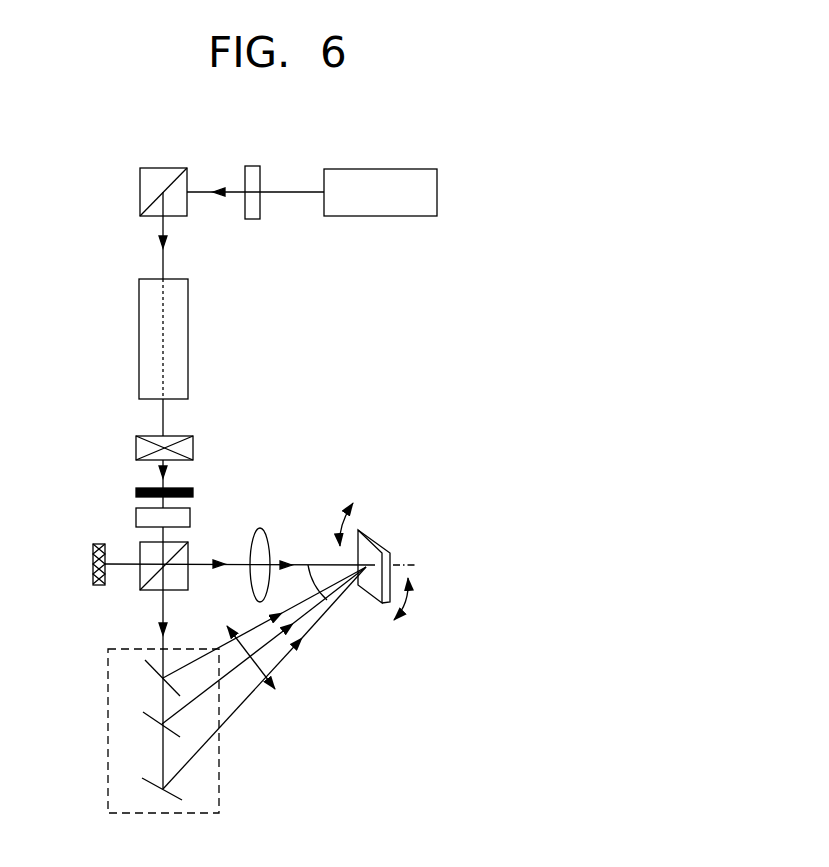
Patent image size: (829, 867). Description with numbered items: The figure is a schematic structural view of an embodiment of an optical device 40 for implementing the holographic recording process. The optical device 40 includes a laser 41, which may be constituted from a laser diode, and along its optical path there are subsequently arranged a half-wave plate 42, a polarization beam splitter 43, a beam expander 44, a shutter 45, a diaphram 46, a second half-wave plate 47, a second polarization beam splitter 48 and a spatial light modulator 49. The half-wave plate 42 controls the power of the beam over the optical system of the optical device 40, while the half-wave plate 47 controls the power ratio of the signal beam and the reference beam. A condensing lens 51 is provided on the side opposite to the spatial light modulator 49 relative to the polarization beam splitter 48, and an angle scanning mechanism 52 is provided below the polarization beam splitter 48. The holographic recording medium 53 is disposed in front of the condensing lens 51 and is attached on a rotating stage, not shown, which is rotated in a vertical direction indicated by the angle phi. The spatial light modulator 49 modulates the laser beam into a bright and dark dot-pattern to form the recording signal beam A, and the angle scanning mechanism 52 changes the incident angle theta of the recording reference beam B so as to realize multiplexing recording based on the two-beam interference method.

The optical device 40 is at (465, 131).
The laser 41 is at (402, 173).
The half-wave plate 42 is at (250, 168).
The polarization beam splitter 43 is at (157, 172).
The beam expander 44 is at (145, 297).
The shutter 45 is at (142, 445).
The diaphram 46 is at (138, 490).
The half-wave plate 47 is at (138, 520).
The polarization beam splitter 48 is at (183, 560).
The spatial light modulator 49 is at (95, 549).
The condensing lens 51 is at (262, 531).
The angle scanning mechanism 52 is at (221, 780).
The holographic recording medium 53 is at (373, 536).